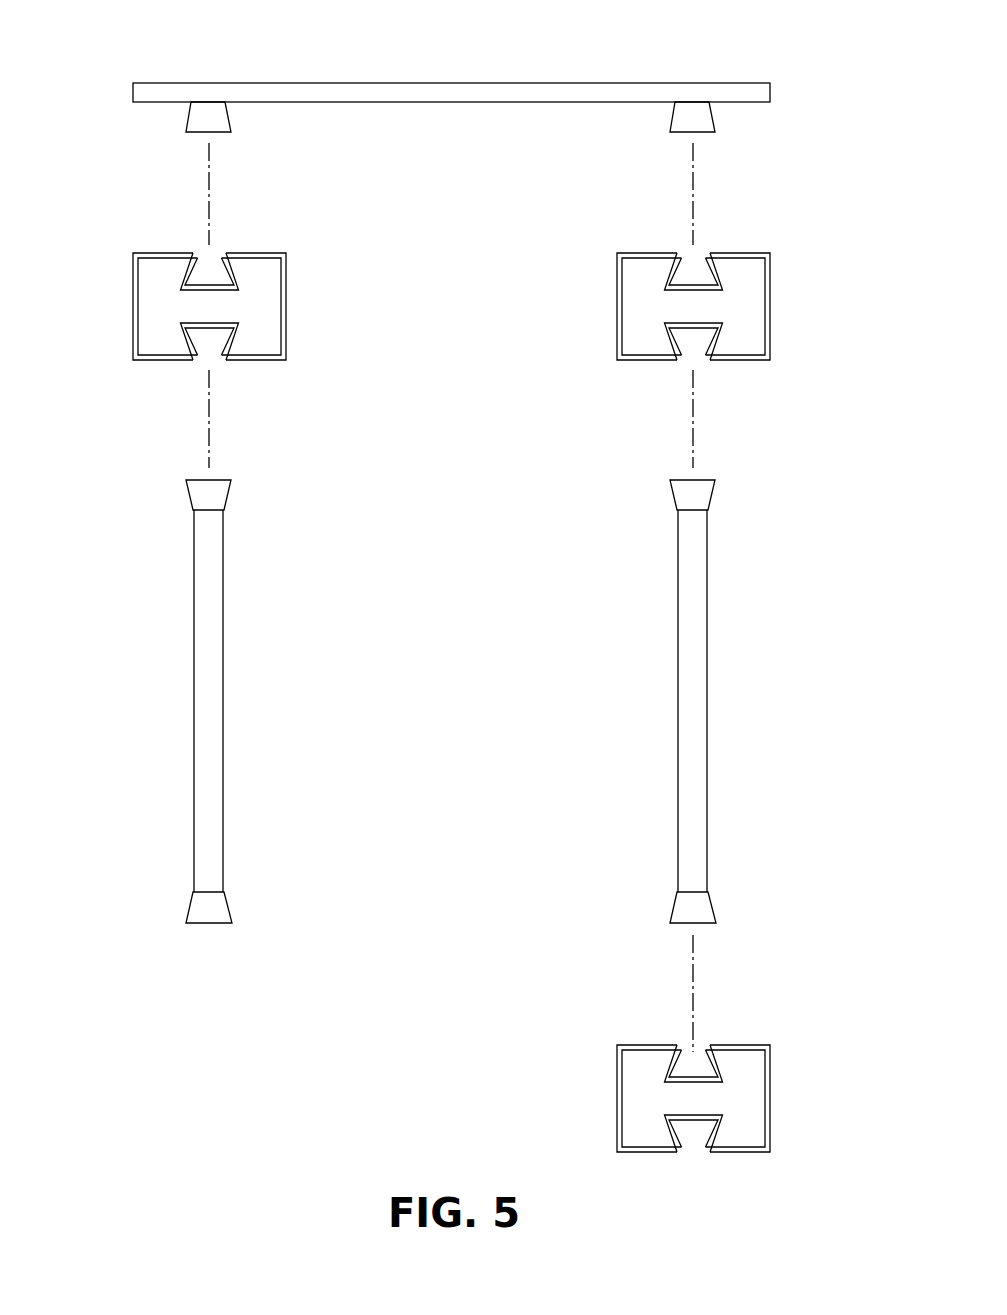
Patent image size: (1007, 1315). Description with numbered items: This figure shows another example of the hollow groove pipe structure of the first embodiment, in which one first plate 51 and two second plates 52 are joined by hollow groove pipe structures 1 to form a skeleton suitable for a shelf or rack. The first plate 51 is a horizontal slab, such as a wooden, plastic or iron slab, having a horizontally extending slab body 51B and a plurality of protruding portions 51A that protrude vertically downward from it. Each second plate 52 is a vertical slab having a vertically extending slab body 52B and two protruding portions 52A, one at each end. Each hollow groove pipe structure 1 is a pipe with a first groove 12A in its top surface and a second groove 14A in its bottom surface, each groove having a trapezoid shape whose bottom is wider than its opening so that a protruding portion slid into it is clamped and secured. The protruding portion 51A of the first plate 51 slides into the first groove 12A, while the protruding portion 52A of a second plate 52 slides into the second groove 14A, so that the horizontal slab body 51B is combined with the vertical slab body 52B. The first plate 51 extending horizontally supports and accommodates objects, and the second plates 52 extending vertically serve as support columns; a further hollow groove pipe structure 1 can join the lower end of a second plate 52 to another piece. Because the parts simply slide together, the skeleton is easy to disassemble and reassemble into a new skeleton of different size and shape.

The hollow groove pipe structure 1 is at (118, 257).
The first groove 12A is at (205, 262).
The second groove 14A is at (205, 363).
The first plate 51 is at (503, 80).
The protruding portion 51A is at (228, 121).
The slab body 51B is at (452, 82).
The second plate 52 is at (459, 704).
The protruding portion 52A is at (192, 495).
The slab body 52B is at (212, 682).